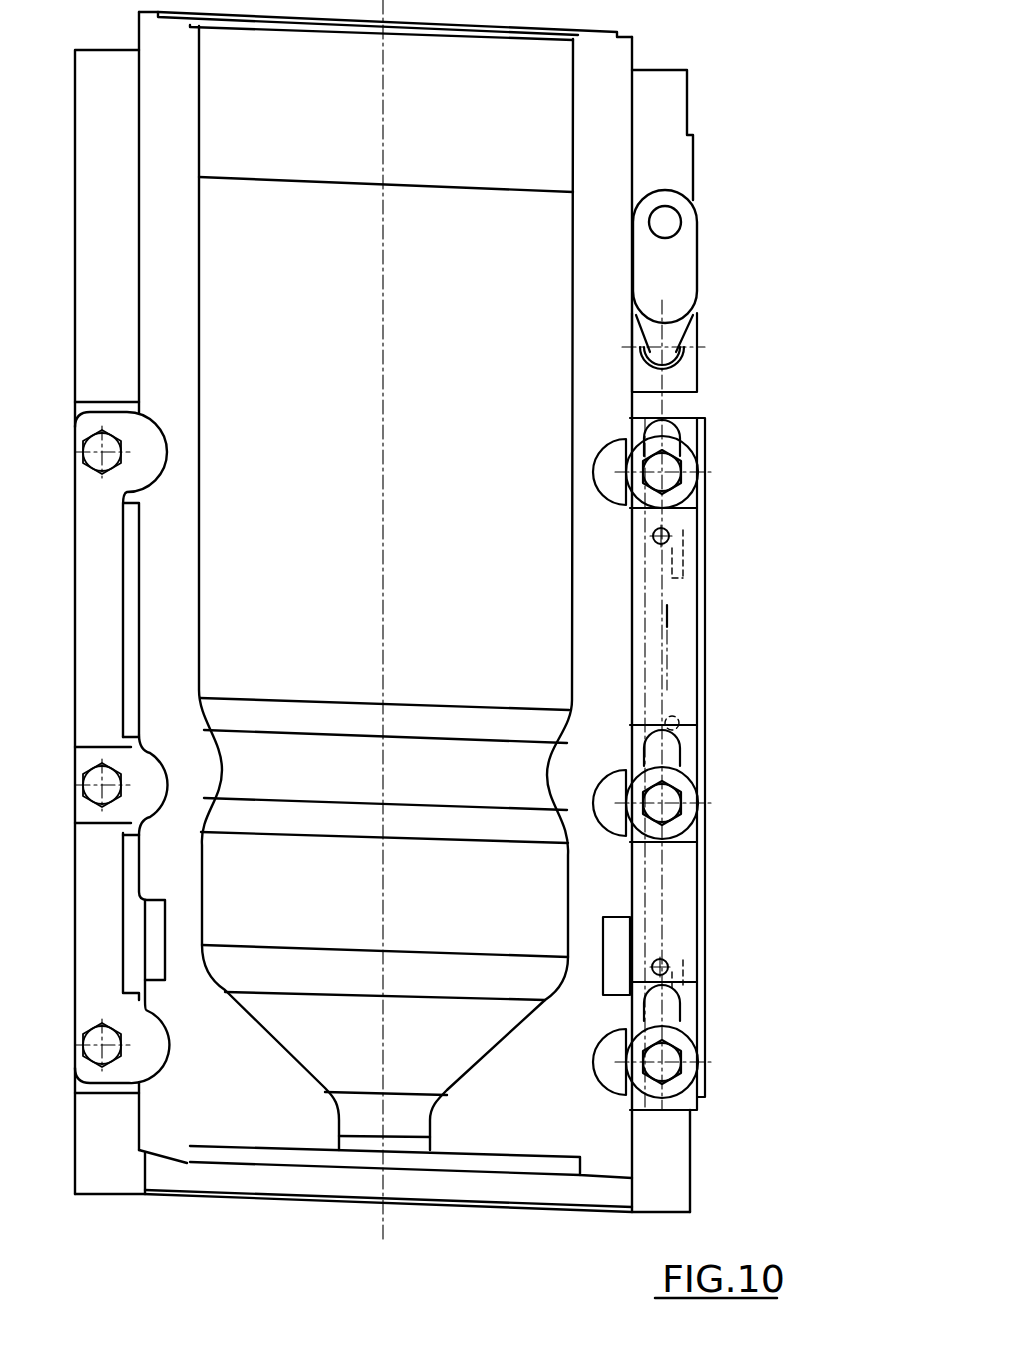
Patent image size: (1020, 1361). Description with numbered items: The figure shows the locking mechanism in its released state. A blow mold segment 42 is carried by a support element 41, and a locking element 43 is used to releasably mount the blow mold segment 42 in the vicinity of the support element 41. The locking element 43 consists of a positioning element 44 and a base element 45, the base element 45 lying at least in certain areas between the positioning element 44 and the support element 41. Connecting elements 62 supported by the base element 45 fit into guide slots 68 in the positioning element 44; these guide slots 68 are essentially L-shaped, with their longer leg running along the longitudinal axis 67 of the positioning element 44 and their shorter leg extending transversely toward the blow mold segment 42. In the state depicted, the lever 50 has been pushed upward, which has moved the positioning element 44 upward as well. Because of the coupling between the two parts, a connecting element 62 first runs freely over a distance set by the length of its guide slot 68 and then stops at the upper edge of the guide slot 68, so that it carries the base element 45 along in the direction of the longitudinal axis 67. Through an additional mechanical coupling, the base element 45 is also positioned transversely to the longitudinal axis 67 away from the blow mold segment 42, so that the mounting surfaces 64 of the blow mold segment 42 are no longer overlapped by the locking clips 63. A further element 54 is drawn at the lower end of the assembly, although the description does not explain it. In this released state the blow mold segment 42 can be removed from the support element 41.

The blow mold segment 42 is at (610, 178).
The support element 41 is at (683, 190).
The lever 50 is at (680, 280).
The positioning element 44 is at (688, 380).
The mounting surfaces 64 is at (608, 462).
The connecting elements 62 is at (664, 534).
The guide slots 68 is at (683, 548).
The base element 45 is at (700, 582).
The longitudinal axis 67 is at (668, 620).
The locking element 43 is at (738, 675).
The locking clips 63 is at (640, 812).
The bolt 54 is at (668, 1072).